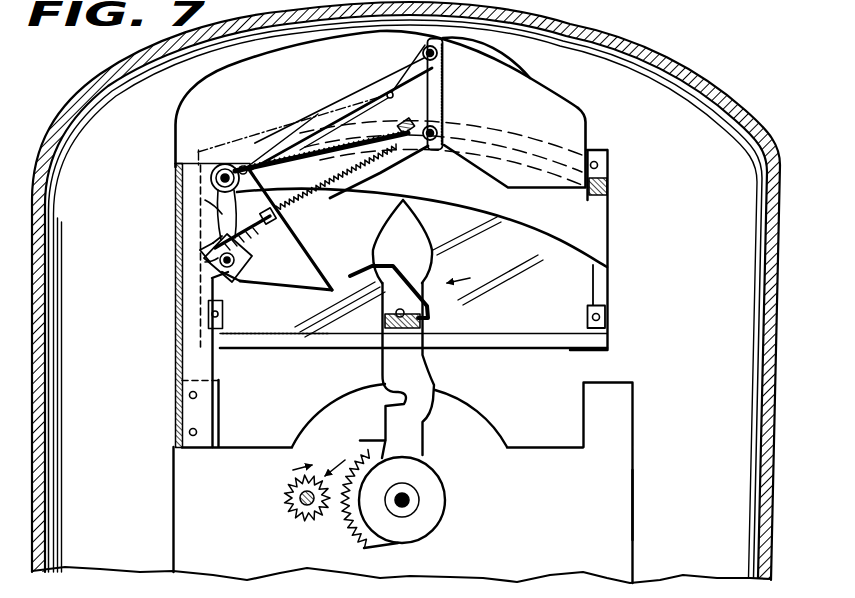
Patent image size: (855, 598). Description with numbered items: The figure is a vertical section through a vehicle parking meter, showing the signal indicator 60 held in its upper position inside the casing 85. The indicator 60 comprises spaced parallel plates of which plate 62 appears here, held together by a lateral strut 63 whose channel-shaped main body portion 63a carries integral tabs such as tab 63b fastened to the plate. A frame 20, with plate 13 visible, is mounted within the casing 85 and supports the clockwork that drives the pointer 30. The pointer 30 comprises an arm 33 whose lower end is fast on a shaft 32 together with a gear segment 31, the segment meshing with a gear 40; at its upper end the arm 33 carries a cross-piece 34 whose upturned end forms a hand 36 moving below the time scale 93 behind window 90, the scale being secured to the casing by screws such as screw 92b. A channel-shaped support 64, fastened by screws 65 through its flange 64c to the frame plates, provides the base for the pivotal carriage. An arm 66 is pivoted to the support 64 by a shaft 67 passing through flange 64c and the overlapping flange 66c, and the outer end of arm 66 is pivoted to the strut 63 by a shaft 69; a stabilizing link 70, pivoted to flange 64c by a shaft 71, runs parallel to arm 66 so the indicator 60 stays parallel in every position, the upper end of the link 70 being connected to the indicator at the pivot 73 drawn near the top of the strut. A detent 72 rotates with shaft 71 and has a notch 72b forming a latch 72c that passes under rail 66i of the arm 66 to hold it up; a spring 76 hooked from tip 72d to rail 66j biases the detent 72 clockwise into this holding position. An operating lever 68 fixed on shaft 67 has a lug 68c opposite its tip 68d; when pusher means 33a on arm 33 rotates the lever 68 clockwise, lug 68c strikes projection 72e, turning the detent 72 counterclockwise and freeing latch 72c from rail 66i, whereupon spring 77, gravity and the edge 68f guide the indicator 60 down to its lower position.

The plate 13 is at (632, 432).
The frame 20 is at (614, 505).
The pointer 30 is at (436, 371).
The gear segment 31 is at (350, 532).
The shaft 32 is at (408, 498).
The arm 33 is at (385, 424).
The pusher means 33a is at (402, 260).
The cross-piece 34 is at (425, 322).
The hand 36 is at (425, 238).
The gear 40 is at (290, 520).
The indicator 60 is at (548, 70).
The plate 62 is at (578, 103).
The lateral strut 63 is at (452, 96).
The channel-shaped main body portion 63a is at (445, 70).
The outer end tab 63b is at (386, 90).
The support 64 is at (175, 320).
The flange 64c is at (200, 366).
The screws 65 is at (189, 432).
The arm 66 is at (414, 158).
The flange 66c is at (368, 192).
The rail 66i is at (214, 242).
The rail 66j is at (420, 120).
The shaft 67 is at (214, 272).
The operating lever 68 is at (314, 276).
The lug 68c is at (212, 258).
The tip 68d is at (276, 319).
The edge 68f is at (258, 282).
The shaft 69 is at (444, 130).
The stabilizing link 70 is at (317, 112).
The shaft 71 is at (226, 163).
The detent 72 is at (205, 204).
The notch 72b is at (270, 196).
The latch 72c is at (210, 222).
The tip 72d is at (243, 165).
The projection 72e is at (200, 250).
The upper pivot 73 is at (423, 51).
The spring 76 is at (276, 156).
The spring 77 is at (352, 192).
The casing 85 is at (712, 92).
The window 90 is at (553, 312).
The screw 92b is at (600, 158).
The time scale 93 is at (607, 224).